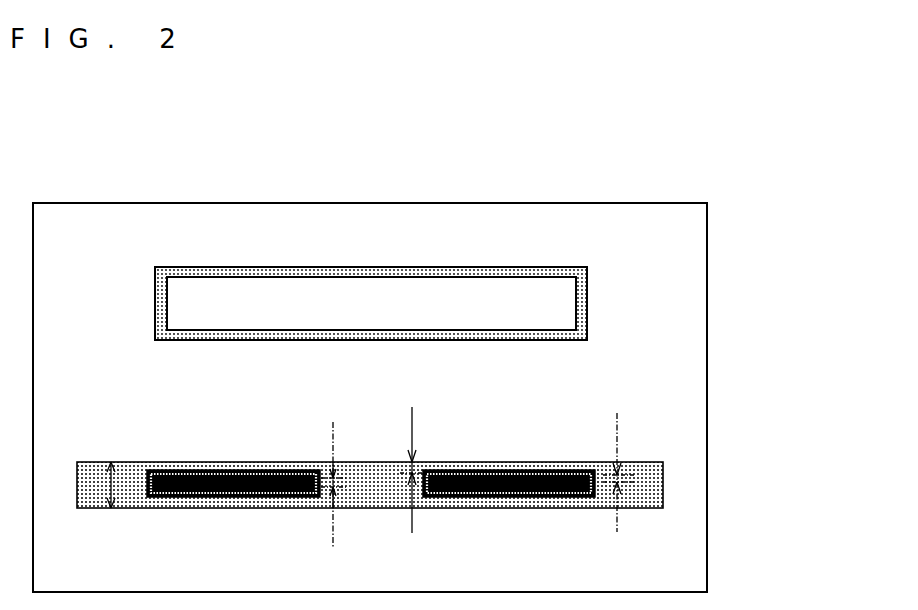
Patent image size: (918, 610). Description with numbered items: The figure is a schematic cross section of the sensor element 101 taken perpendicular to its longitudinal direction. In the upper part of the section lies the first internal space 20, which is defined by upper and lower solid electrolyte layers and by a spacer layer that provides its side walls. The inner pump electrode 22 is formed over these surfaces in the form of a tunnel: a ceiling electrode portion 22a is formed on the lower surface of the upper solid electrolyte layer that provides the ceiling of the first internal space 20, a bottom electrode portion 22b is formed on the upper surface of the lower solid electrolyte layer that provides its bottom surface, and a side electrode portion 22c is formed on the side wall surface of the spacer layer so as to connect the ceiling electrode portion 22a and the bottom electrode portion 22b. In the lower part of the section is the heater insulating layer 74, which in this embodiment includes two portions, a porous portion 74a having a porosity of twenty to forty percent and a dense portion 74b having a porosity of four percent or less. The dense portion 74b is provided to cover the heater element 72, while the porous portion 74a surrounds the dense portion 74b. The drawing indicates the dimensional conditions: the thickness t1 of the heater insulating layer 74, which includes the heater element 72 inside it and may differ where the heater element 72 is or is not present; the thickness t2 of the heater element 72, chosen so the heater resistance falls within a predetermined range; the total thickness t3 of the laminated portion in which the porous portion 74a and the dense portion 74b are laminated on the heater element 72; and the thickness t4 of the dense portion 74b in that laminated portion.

The sensor element 101 is at (625, 202).
The first internal space 20 is at (373, 305).
The inner pump electrode 22 is at (788, 255).
The ceiling electrode portion 22a is at (560, 267).
The bottom electrode portion 22b is at (560, 340).
The side electrode portion 22c is at (576, 302).
The heater insulating layer 74 is at (663, 480).
The porous portion 74a is at (370, 485).
The dense portion 74b is at (445, 492).
The heater element 72 is at (553, 488).
The thickness of the heater insulating layer t1 is at (113, 484).
The thickness of the heater element t2 is at (333, 443).
The total thickness of the laminated portion t3 is at (412, 432).
The dense portion thickness t4 is at (617, 443).